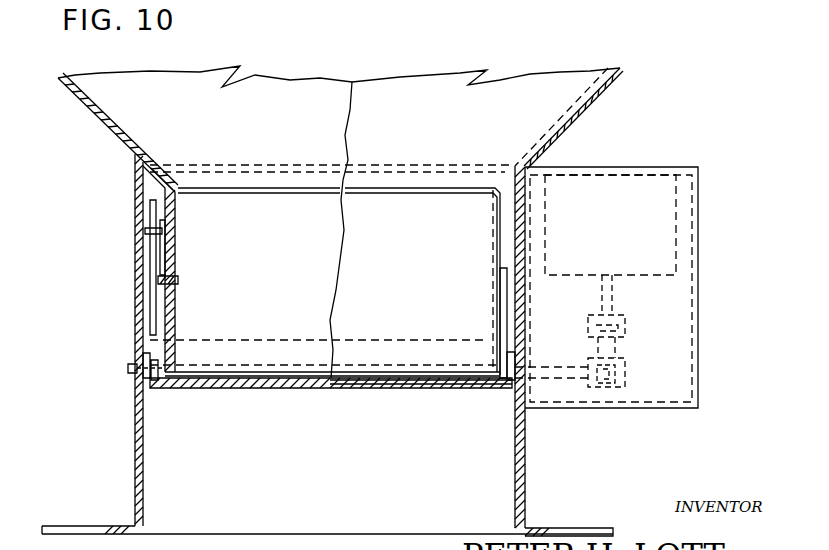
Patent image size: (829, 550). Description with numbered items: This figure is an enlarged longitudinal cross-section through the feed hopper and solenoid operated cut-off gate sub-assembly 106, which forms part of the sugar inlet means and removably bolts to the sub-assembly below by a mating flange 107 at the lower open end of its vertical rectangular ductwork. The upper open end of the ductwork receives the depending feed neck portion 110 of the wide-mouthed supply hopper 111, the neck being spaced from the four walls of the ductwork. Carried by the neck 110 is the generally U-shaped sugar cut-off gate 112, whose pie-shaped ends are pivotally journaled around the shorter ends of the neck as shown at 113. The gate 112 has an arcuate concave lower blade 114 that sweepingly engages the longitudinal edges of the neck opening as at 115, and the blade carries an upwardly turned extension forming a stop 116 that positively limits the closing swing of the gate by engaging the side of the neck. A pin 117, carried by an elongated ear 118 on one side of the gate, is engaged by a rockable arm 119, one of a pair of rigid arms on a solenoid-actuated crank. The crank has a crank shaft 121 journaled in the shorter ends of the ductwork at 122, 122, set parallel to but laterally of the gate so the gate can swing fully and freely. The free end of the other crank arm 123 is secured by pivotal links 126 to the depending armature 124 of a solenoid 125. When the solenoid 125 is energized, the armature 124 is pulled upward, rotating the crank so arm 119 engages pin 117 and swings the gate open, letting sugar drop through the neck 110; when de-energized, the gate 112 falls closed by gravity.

The feed hopper and solenoid operated cut-off gate sub-assembly 106 is at (528, 164).
The mating flange 107 is at (100, 525).
The feed neck portion 110 is at (176, 318).
The supply hopper 111 is at (580, 91).
The sugar cut-off gate 112 is at (428, 388).
The pivotal journal 113 is at (176, 283).
The lower blade 114 is at (290, 388).
The engagement of blade with neck edges 115 is at (487, 372).
The stop 116 is at (268, 340).
The pin 117 is at (150, 231).
The elongated ear 118 is at (163, 226).
The rockable arm 119 is at (152, 212).
The crank shaft 121 is at (130, 371).
The crank shaft journals 122 is at (142, 362).
The crank arm 123 is at (610, 385).
The armature 124 is at (612, 294).
The solenoid 125 is at (676, 195).
The pivotal links 126 is at (617, 348).